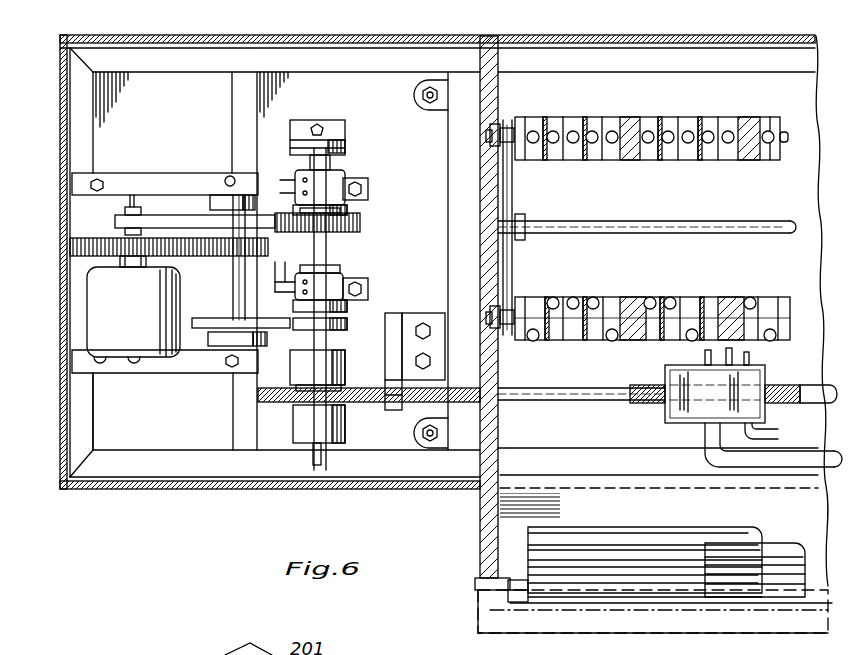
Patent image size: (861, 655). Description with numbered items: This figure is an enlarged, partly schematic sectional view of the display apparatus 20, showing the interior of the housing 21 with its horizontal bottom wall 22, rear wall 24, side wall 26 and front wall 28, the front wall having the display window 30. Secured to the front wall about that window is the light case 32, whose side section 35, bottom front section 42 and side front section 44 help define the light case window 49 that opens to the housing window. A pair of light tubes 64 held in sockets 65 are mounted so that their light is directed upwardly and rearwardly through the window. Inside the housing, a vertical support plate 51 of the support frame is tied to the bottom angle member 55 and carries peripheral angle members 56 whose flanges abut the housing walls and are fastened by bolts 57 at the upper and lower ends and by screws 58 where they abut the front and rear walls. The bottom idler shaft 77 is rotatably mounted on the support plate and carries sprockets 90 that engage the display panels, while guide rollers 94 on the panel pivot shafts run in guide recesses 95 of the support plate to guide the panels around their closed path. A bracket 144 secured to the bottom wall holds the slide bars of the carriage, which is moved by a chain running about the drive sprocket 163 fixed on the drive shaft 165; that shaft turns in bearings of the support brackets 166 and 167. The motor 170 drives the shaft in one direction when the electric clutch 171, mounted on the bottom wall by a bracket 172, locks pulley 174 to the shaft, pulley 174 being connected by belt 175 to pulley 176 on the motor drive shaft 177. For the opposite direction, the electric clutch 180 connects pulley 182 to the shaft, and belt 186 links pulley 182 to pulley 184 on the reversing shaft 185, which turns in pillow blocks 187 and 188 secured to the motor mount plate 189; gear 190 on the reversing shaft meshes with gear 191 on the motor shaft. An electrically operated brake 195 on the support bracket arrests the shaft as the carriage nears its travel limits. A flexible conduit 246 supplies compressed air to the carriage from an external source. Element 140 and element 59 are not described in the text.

The display apparatus 20 is at (705, 28).
The housing 21 is at (182, 490).
The bottom wall 22 is at (192, 261).
The rear wall 24 is at (376, 36).
The side wall 26 is at (62, 206).
The front wall 28 is at (295, 488).
The display window 30 is at (480, 516).
The light case 32 is at (478, 565).
The side section 35 is at (480, 550).
The bottom front section 42 is at (658, 626).
The side front section 44 is at (476, 600).
The light case window 49 is at (793, 602).
The support plate 51 is at (498, 46).
The bottom angle member 55 is at (698, 72).
The peripheral angle member 56 is at (478, 62).
The bolt 57 is at (420, 95).
The screw 58 is at (470, 40).
The frame member 59 is at (480, 532).
The light tube 64 is at (612, 562).
The socket 65 is at (520, 532).
The bottom idler shaft 77 is at (718, 200).
The sprocket 90 is at (512, 202).
The guide roller 94 is at (490, 142).
The guide recess 95 is at (490, 124).
The valve housing 140 is at (680, 420).
The bracket 144 is at (424, 302).
The drive sprocket 163 is at (368, 398).
The drive shaft 165 is at (322, 348).
The support bracket 166 is at (298, 422).
The support bracket 167 is at (348, 147).
The motor 170 is at (112, 366).
The electric clutch 171 is at (348, 174).
The bracket 172 is at (368, 196).
The pulley 174 is at (362, 224).
The belt 175 is at (188, 224).
The pulley 176 is at (122, 212).
The motor drive shaft 177 is at (146, 188).
The electric clutch 180 is at (344, 278).
The pulley 182 is at (342, 326).
The pulley 184 is at (216, 318).
The reversing shaft 185 is at (232, 268).
The belt 186 is at (274, 336).
The pillow block 187 is at (228, 194).
The pillow block 188 is at (226, 366).
The mount plate 189 is at (182, 372).
The gear 190 is at (268, 250).
The gear 191 is at (75, 238).
The electrically operated brake 195 is at (320, 454).
The flexible conduit 246 is at (763, 474).